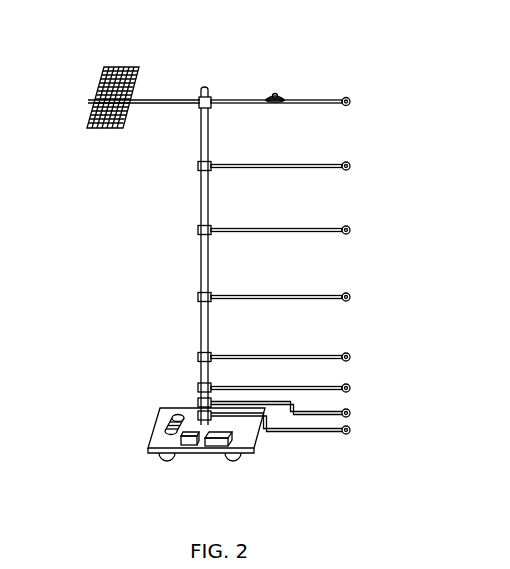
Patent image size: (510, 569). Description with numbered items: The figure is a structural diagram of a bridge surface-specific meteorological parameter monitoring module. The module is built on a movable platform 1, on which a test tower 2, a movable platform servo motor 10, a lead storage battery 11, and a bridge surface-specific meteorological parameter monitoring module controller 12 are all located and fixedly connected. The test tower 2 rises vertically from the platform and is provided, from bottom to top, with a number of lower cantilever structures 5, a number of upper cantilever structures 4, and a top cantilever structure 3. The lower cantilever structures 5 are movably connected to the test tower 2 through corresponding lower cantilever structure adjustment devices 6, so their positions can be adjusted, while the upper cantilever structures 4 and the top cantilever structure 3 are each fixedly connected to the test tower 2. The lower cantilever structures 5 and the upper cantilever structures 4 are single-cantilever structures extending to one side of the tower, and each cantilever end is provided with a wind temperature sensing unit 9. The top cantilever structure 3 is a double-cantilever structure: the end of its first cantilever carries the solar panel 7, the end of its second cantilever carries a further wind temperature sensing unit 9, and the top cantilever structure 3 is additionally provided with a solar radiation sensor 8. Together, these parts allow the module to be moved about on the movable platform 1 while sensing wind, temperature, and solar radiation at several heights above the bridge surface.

The movable platform 1 is at (187, 449).
The test tower 2 is at (186, 52).
The top cantilever structure 3 is at (170, 261).
The upper cantilever structures 4 is at (228, 235).
The lower cantilever structures 5 is at (295, 417).
The lower cantilever structure adjustment devices 6 is at (197, 415).
The solar panel 7 is at (115, 94).
The solar radiation sensor 8 is at (312, 82).
The wind temperature sensing unit 9 is at (348, 428).
The movable platform servo motor 10 is at (131, 417).
The lead storage battery 11 is at (206, 466).
The bridge surface-specific meteorological parameter monitoring module controller 12 is at (263, 466).